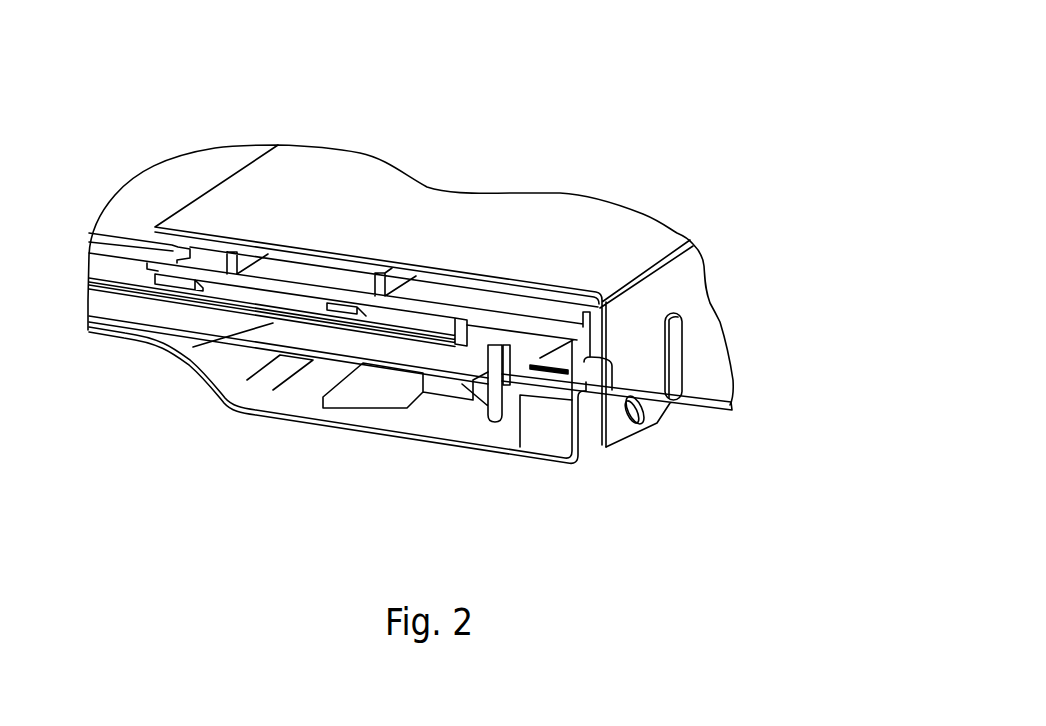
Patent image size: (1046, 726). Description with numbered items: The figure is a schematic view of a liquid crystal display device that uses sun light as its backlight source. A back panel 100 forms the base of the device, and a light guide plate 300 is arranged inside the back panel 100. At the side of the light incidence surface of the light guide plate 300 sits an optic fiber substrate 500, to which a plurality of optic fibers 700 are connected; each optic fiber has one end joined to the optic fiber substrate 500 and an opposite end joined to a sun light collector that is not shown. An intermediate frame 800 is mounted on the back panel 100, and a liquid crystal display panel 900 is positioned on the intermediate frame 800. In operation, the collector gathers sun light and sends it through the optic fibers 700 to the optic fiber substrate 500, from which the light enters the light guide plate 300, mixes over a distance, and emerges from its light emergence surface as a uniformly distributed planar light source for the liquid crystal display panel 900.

The back panel 100 is at (413, 432).
The light guide plate 300 is at (273, 325).
The optic fiber substrate 500 is at (507, 368).
The optic fibers 700 is at (647, 390).
The intermediate frame 800 is at (483, 318).
The liquid crystal display panel 900 is at (138, 248).